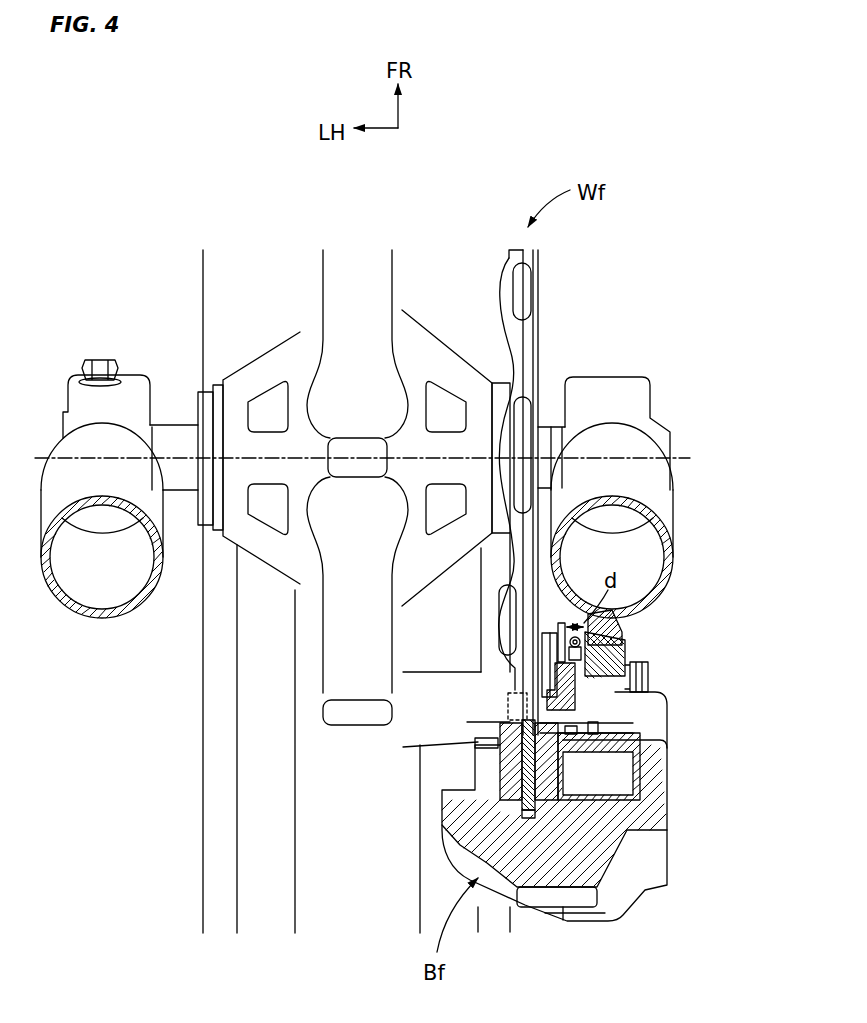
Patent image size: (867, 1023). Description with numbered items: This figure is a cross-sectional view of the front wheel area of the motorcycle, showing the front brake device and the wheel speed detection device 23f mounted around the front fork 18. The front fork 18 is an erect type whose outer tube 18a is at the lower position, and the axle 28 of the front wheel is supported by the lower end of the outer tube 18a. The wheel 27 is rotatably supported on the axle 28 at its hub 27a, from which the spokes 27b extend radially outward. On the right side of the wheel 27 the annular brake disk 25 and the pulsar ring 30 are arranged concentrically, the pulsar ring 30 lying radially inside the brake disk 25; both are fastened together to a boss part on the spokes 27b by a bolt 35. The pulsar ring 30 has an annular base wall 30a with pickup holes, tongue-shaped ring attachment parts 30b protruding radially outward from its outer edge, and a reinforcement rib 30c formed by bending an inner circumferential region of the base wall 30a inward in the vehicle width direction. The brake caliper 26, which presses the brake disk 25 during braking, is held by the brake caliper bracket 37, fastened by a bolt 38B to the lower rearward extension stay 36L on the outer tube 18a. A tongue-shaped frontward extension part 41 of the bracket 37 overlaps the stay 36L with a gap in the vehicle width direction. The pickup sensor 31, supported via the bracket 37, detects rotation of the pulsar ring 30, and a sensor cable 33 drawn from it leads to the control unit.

The front fork 18 is at (76, 624).
The outer tube 18a is at (67, 477).
The wheel speed detection device 23f is at (566, 612).
The brake disk 25 is at (527, 812).
The brake caliper 26 is at (605, 855).
The wheel 27 is at (312, 479).
The hub 27a is at (268, 368).
The spoke 27b is at (357, 450).
The axle 28 is at (172, 433).
The pulsar ring 30 is at (541, 302).
The base wall 30a is at (534, 413).
The ring attachment part 30b is at (520, 673).
The reinforcement rib 30c is at (523, 360).
The pickup sensor 31 is at (553, 645).
The sensor cable 33 is at (582, 641).
The bolt 35 is at (508, 722).
The lower rearward extension stay 36L is at (617, 678).
The brake caliper bracket 37 is at (563, 687).
The bolt 38B is at (646, 678).
The frontward extension part 41 is at (563, 634).